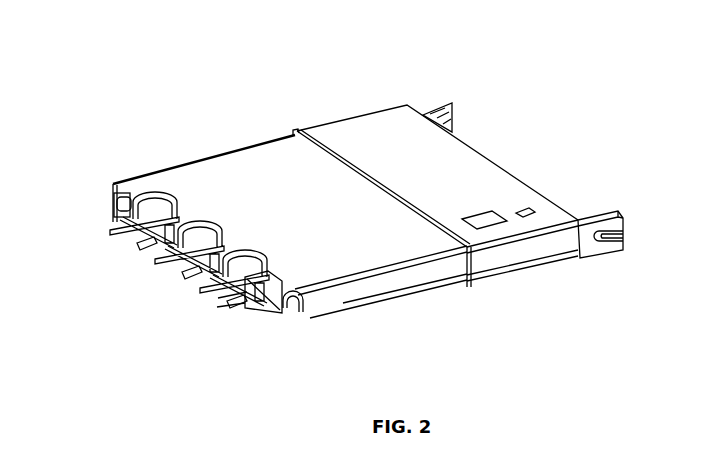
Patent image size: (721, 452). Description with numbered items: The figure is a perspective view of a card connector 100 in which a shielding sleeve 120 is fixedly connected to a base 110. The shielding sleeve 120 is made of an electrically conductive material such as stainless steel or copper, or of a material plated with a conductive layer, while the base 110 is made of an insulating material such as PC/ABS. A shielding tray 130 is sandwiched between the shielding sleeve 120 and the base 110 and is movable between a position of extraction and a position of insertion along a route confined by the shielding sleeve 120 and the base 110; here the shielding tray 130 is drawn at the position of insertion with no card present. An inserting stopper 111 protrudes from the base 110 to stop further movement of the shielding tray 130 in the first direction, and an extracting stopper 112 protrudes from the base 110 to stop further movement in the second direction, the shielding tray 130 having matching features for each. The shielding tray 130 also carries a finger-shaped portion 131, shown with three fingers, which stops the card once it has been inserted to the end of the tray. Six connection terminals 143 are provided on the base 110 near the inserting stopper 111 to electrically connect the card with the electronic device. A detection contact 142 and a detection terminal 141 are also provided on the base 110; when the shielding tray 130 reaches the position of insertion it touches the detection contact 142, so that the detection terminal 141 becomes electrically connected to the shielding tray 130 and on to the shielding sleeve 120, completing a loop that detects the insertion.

The card connector 100 is at (225, 51).
The base 110 is at (262, 312).
The inserting stopper 111 is at (298, 303).
The extracting stopper 112 is at (618, 244).
The shielding sleeve 120 is at (367, 140).
The shielding tray 130 is at (249, 173).
The finger-shaped portion 131 is at (122, 204).
The detection terminal 141 is at (599, 258).
The detection contact 142 is at (298, 306).
The connection terminals 143 is at (132, 248).